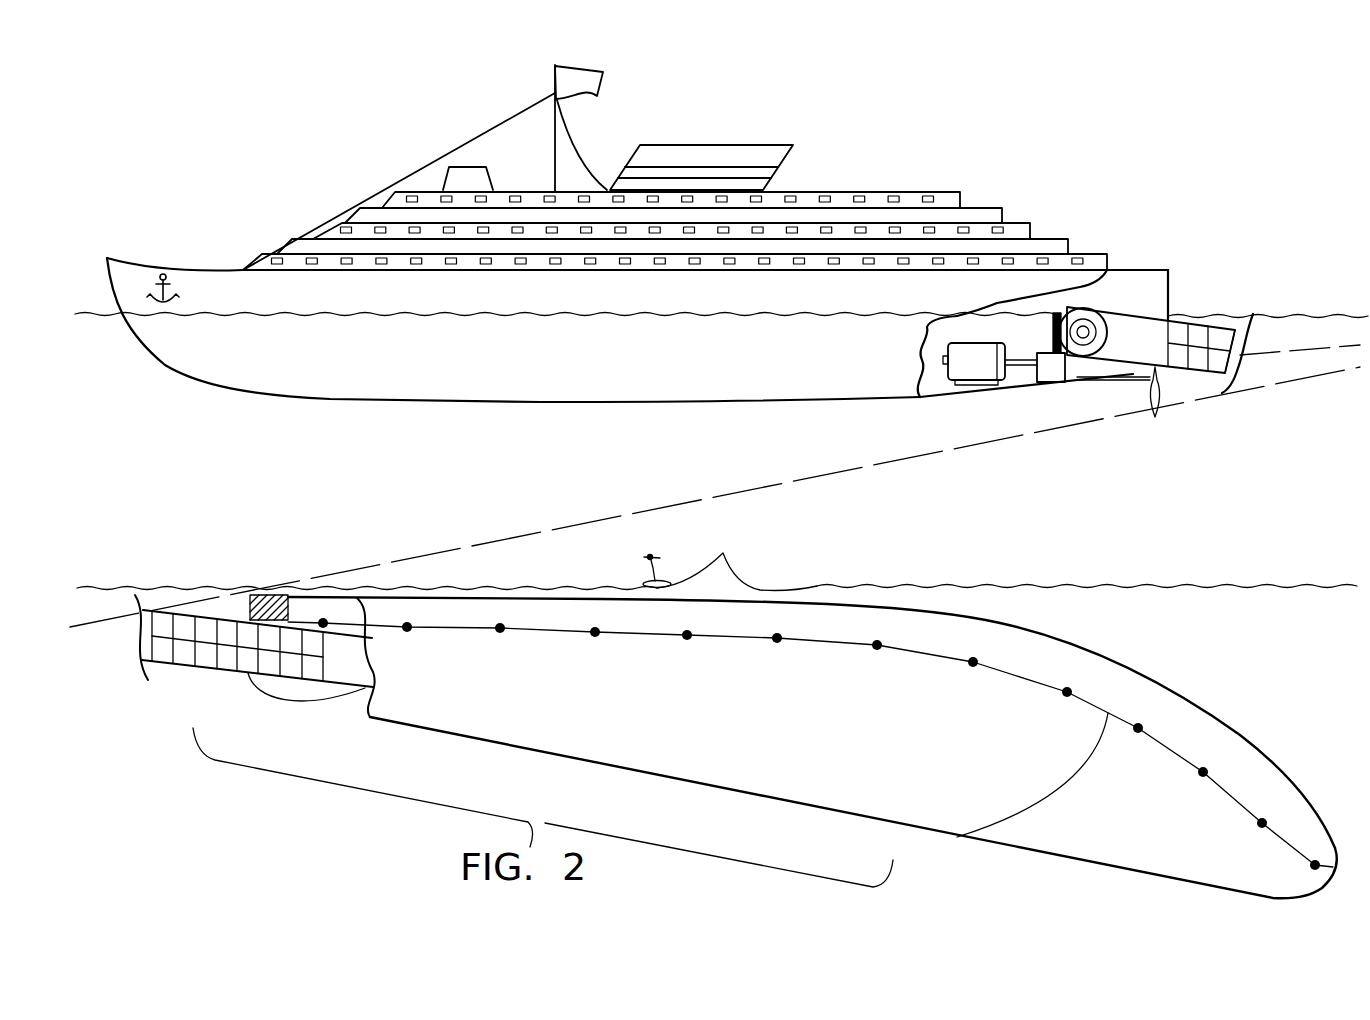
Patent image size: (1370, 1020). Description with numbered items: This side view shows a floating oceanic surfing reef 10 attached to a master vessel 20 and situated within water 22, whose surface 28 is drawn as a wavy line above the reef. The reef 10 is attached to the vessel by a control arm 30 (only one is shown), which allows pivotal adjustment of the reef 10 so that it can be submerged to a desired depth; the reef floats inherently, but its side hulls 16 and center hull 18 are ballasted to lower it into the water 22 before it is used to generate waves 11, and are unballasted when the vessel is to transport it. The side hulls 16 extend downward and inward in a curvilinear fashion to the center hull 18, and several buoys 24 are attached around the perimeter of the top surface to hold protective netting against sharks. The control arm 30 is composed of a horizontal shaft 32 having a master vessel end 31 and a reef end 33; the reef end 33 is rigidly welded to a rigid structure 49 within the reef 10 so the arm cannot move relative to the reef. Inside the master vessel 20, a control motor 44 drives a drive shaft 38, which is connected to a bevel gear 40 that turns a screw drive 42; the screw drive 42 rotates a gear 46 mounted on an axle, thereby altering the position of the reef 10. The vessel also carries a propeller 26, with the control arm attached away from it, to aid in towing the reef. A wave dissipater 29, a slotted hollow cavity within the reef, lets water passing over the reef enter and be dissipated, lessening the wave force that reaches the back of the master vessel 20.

The floating oceanic surfing reef 10 is at (812, 714).
The waves 11 is at (745, 553).
The side hulls 16 is at (948, 812).
The center hull 18 is at (1113, 845).
The master vessel 20 is at (842, 190).
The water 22 is at (1200, 602).
The buoys 24 is at (877, 645).
The propellers 26 is at (1155, 405).
The water surface 28 is at (1053, 588).
The wave dissipater 29 is at (267, 610).
The control arm 30 is at (679, 472).
The master vessel end 31 is at (1133, 327).
The horizontal shaft 32 is at (1220, 337).
The reef end 33 is at (267, 660).
The drive shaft 38 is at (1017, 367).
The bevel gear 40 is at (1058, 370).
The screw drive 42 is at (1053, 320).
The control motor 44 is at (968, 362).
The gear 46 is at (1107, 302).
The rigid structure 49 is at (347, 672).